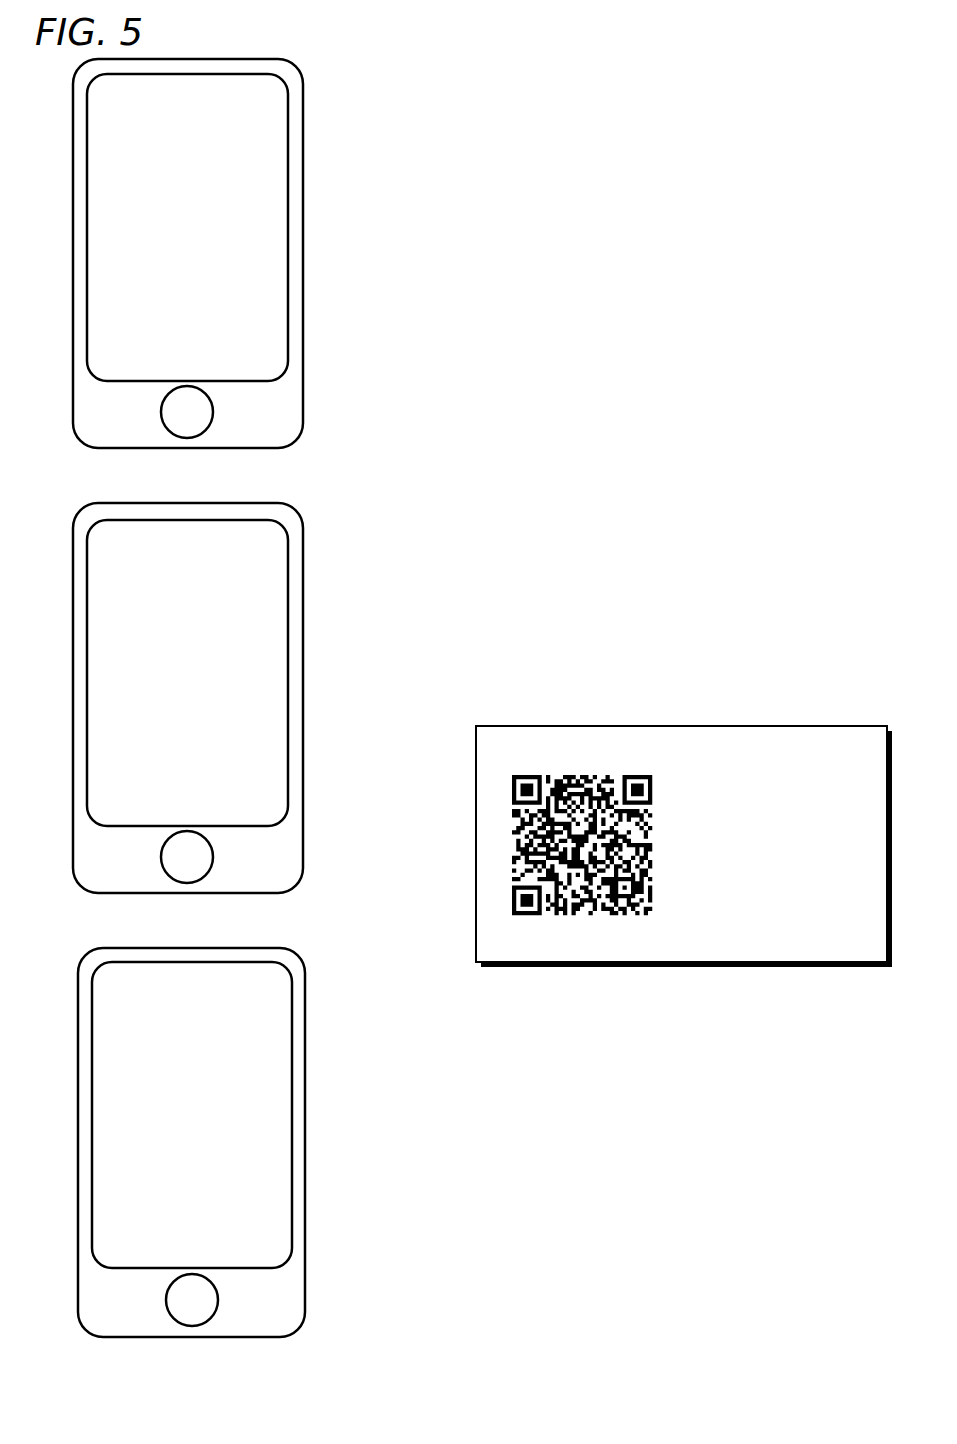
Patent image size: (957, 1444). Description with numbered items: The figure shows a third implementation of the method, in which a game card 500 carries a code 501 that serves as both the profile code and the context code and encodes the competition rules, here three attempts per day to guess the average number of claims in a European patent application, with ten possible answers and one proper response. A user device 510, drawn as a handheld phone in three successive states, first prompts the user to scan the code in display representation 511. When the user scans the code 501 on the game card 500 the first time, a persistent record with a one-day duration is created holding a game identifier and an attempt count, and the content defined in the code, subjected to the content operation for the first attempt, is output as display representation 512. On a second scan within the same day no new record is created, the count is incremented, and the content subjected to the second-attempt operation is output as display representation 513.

The game card 500 is at (518, 970).
The code 501 is at (578, 917).
The user device 510 is at (82, 963).
The display representation 511 is at (268, 142).
The display representation 512 is at (273, 542).
The display representation 513 is at (258, 1243).